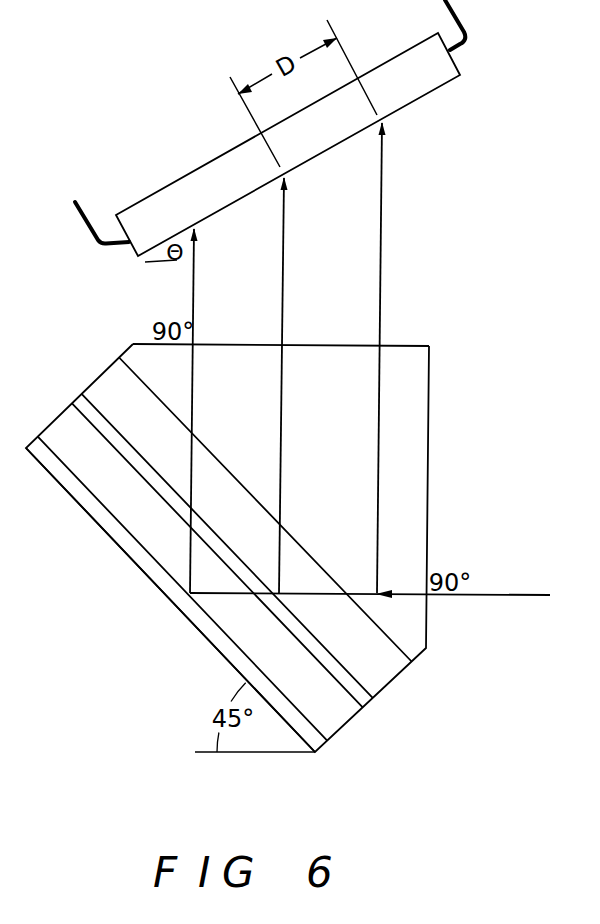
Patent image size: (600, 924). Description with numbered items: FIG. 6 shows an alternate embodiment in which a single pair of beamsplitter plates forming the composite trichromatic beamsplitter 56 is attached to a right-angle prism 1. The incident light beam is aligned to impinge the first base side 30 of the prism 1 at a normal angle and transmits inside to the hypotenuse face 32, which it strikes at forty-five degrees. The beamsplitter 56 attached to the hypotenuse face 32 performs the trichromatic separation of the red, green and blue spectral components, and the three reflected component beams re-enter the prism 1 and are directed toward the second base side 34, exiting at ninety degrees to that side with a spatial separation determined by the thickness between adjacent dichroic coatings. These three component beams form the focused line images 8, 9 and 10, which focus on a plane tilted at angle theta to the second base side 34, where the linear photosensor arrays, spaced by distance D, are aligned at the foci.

The right-angle prism 1 is at (422, 498).
The focused line image 8 is at (194, 298).
The focused line image 9 is at (284, 298).
The focused line image 10 is at (382, 297).
The first base side 30 is at (427, 623).
The hypotenuse face 32 is at (297, 512).
The second base side 34 is at (413, 346).
The trichromatic beamsplitter 56 is at (155, 625).